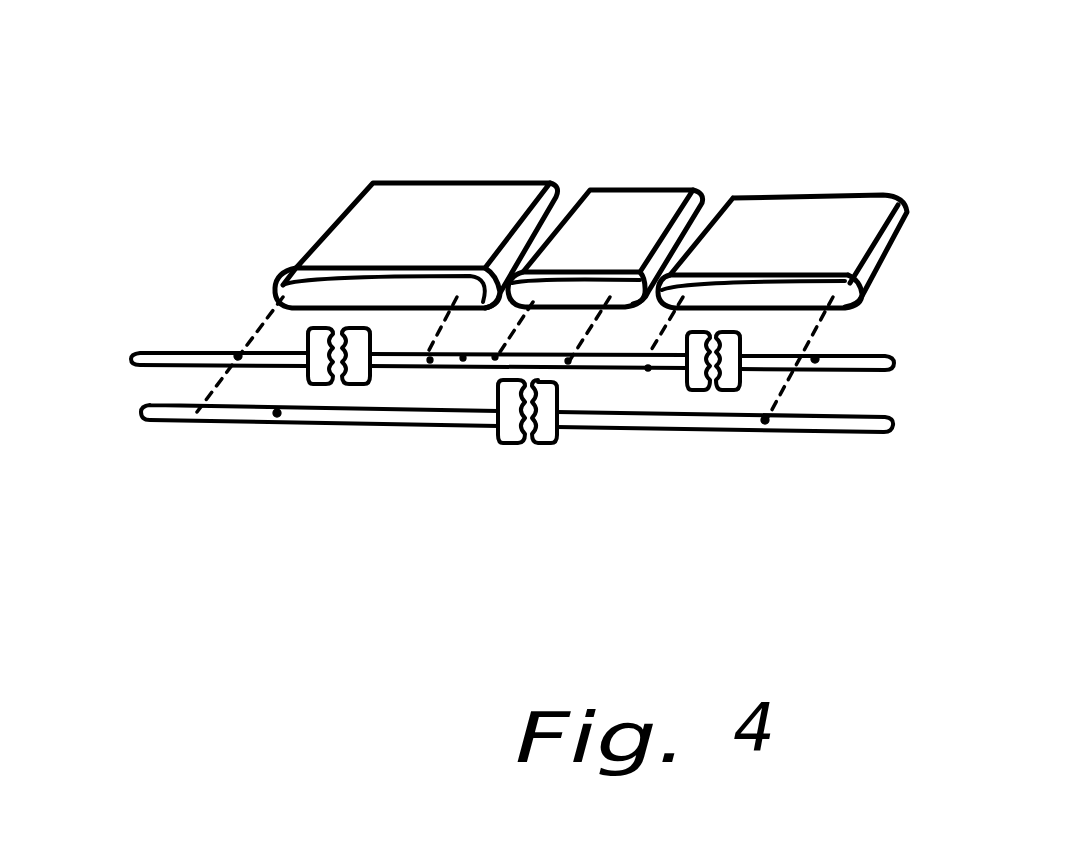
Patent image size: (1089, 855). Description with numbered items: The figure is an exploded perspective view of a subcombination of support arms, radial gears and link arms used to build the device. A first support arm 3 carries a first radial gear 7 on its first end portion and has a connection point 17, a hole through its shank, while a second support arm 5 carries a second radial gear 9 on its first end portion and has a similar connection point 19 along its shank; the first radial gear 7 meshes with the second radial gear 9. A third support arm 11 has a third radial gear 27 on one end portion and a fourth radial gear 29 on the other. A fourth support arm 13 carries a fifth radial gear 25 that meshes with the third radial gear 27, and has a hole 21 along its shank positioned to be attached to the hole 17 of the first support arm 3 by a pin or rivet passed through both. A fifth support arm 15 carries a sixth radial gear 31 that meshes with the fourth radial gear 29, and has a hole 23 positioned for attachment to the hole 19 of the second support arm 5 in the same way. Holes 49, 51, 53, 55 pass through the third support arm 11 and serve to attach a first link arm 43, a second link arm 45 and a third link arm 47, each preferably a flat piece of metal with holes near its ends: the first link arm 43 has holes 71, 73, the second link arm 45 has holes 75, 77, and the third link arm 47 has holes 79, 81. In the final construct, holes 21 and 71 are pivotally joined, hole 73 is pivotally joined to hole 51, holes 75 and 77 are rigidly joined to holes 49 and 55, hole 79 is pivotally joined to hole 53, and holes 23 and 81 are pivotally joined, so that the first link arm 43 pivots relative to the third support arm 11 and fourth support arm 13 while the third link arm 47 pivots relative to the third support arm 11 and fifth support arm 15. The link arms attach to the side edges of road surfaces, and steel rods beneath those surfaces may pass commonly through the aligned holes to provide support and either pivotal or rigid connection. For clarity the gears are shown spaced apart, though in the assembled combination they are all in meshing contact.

The first support arm 3 is at (277, 412).
The second support arm 5 is at (847, 420).
The first radial gear 7 is at (513, 445).
The second radial gear 9 is at (550, 444).
The third support arm 11 is at (463, 357).
The fourth support arm 13 is at (160, 352).
The fifth support arm 15 is at (893, 356).
The connection point 17 is at (200, 413).
The connection point 19 is at (763, 420).
The hole 21 is at (238, 352).
The hole 23 is at (817, 358).
The fifth radial gear 25 is at (320, 384).
The third radial gear 27 is at (358, 384).
The fourth radial gear 29 is at (695, 392).
The sixth radial gear 31 is at (728, 390).
The first link arm 43 is at (418, 296).
The second link arm 45 is at (580, 298).
The third link arm 47 is at (800, 275).
The hole 49 is at (495, 355).
The hole 51 is at (430, 360).
The hole 53 is at (648, 370).
The hole 55 is at (567, 360).
The hole 71 is at (283, 297).
The hole 73 is at (457, 295).
The hole 75 is at (533, 302).
The hole 77 is at (610, 295).
The hole 79 is at (683, 297).
The hole 81 is at (833, 293).